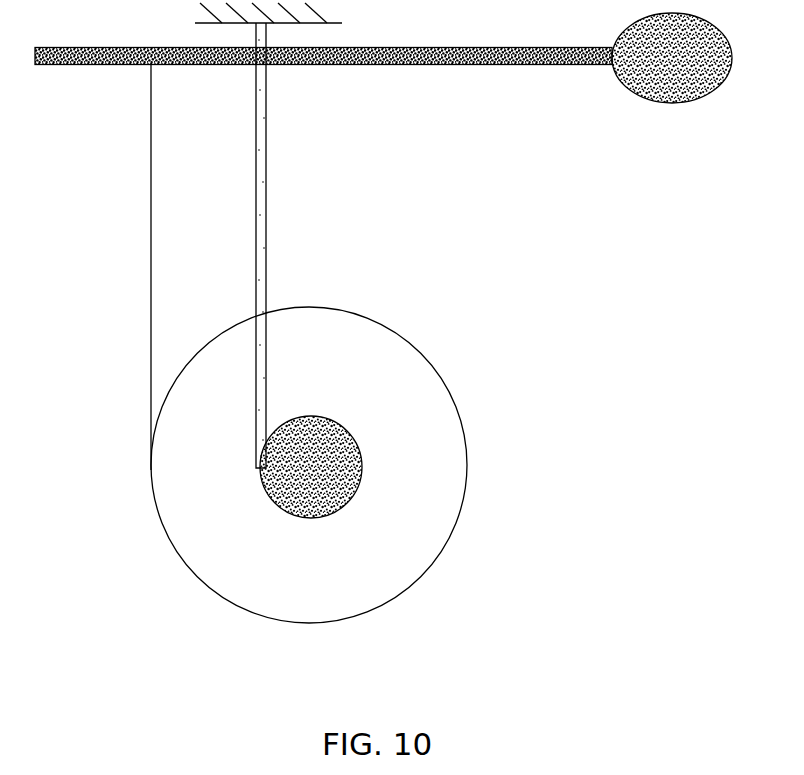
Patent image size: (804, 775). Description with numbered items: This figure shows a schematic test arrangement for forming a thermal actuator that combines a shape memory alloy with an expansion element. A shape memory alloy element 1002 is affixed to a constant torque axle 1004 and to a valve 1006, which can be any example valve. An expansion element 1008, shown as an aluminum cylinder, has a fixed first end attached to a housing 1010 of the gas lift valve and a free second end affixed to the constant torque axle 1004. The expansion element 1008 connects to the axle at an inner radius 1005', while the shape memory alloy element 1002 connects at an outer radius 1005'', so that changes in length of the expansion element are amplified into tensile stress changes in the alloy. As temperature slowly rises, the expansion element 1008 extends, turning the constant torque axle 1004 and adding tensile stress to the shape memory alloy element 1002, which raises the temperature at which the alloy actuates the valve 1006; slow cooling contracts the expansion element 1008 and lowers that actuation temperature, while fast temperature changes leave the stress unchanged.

The shape memory alloy element 1002 is at (151, 284).
The constant torque axle 1004 is at (337, 488).
The inner radius 1005' is at (337, 465).
The outer radius 1005'' is at (353, 467).
The valve 1006 is at (672, 103).
The expansion element 1008 is at (266, 170).
The housing 1010 is at (312, 25).